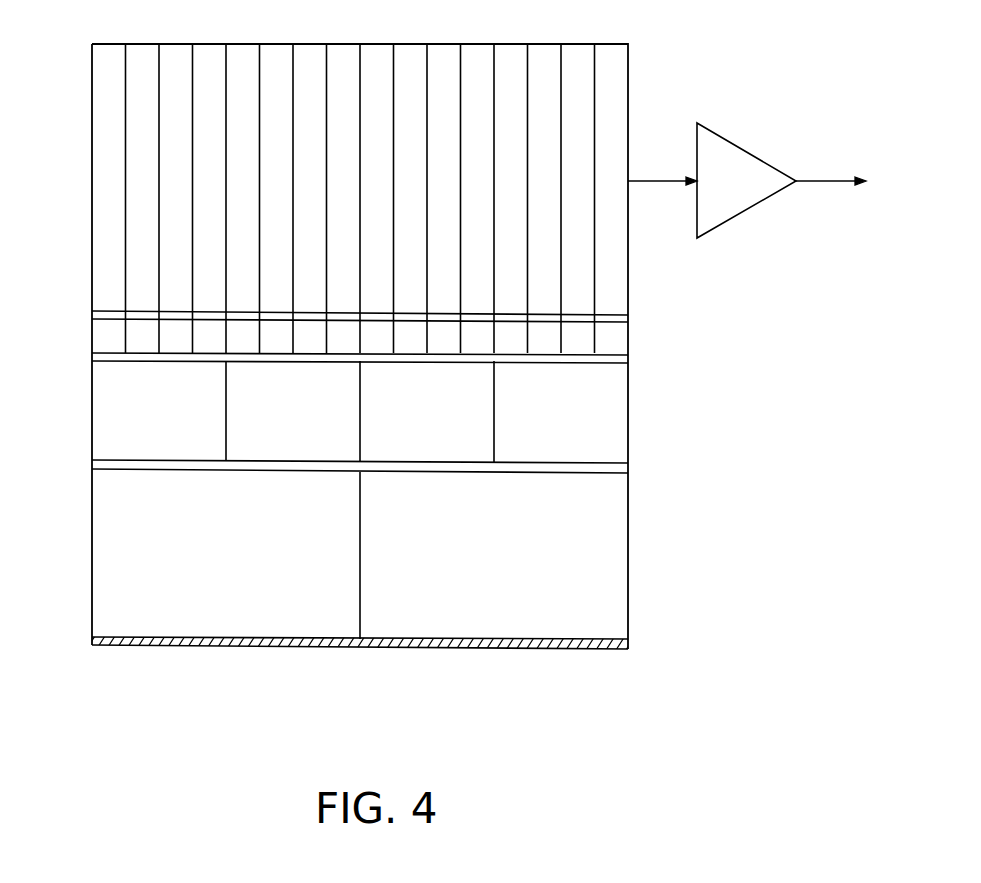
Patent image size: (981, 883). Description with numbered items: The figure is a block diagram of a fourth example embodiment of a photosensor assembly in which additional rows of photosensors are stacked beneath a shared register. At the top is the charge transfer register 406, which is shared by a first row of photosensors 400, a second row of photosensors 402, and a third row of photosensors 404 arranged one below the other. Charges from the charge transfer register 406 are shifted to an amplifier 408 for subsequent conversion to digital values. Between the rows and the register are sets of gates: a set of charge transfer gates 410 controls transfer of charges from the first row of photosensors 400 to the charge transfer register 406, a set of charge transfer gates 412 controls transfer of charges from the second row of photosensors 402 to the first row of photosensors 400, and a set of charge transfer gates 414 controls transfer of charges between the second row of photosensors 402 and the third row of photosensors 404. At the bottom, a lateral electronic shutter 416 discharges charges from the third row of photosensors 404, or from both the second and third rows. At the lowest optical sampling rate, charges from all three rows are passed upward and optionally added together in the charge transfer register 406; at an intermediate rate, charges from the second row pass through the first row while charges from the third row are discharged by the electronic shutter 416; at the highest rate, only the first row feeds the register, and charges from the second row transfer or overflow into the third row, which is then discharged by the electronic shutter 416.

The first row of photosensors 400 is at (628, 336).
The second row of photosensors 402 is at (628, 413).
The third row of photosensors 404 is at (628, 556).
The charge transfer register 406 is at (628, 92).
The amplifier 408 is at (751, 197).
The charge transfer gates 410 is at (92, 311).
The charge transfer gates 412 is at (92, 354).
The charge transfer gates 414 is at (92, 461).
The lateral electronic shutter 416 is at (92, 638).